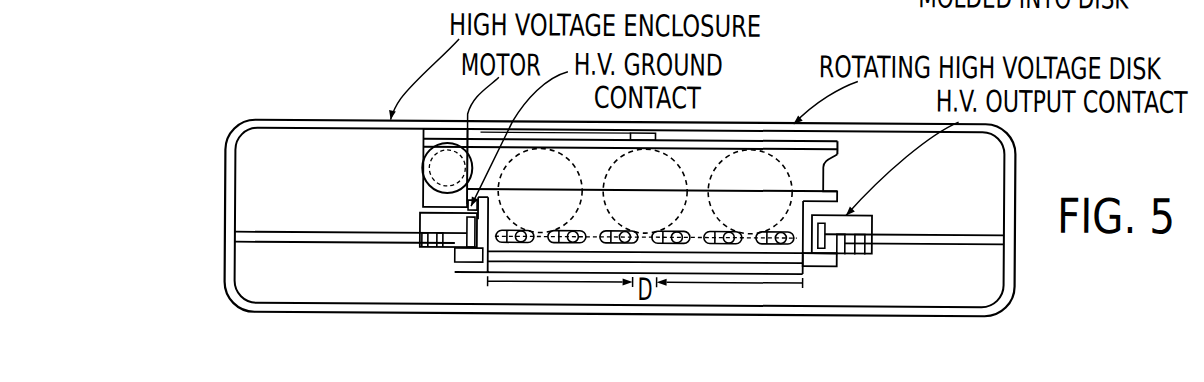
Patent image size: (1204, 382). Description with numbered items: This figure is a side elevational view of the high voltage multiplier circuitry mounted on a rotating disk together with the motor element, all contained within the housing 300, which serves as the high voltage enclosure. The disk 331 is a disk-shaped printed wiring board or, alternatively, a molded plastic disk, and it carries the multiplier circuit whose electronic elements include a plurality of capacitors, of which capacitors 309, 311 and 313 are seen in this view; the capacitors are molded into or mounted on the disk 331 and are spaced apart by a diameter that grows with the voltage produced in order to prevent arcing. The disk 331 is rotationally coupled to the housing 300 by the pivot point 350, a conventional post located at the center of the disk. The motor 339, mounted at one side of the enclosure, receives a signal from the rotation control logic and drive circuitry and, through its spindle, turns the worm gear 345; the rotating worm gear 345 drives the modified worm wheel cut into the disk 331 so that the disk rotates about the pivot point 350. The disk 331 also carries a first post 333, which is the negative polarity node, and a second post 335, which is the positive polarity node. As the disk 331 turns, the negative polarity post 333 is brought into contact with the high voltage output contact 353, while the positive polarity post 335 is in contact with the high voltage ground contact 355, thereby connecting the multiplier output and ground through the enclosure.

The housing 300 is at (1013, 143).
The capacitor 309 is at (630, 138).
The capacitor 311 is at (751, 149).
The capacitor 313 is at (824, 166).
The disk 331 is at (812, 266).
The first post 333 is at (828, 246).
The second post 335 is at (466, 244).
The motor 339 is at (423, 198).
The worm gear 345 is at (421, 164).
The pivot point 350 is at (657, 137).
The high voltage output contact 353 is at (858, 217).
The high voltage ground contact 355 is at (420, 229).